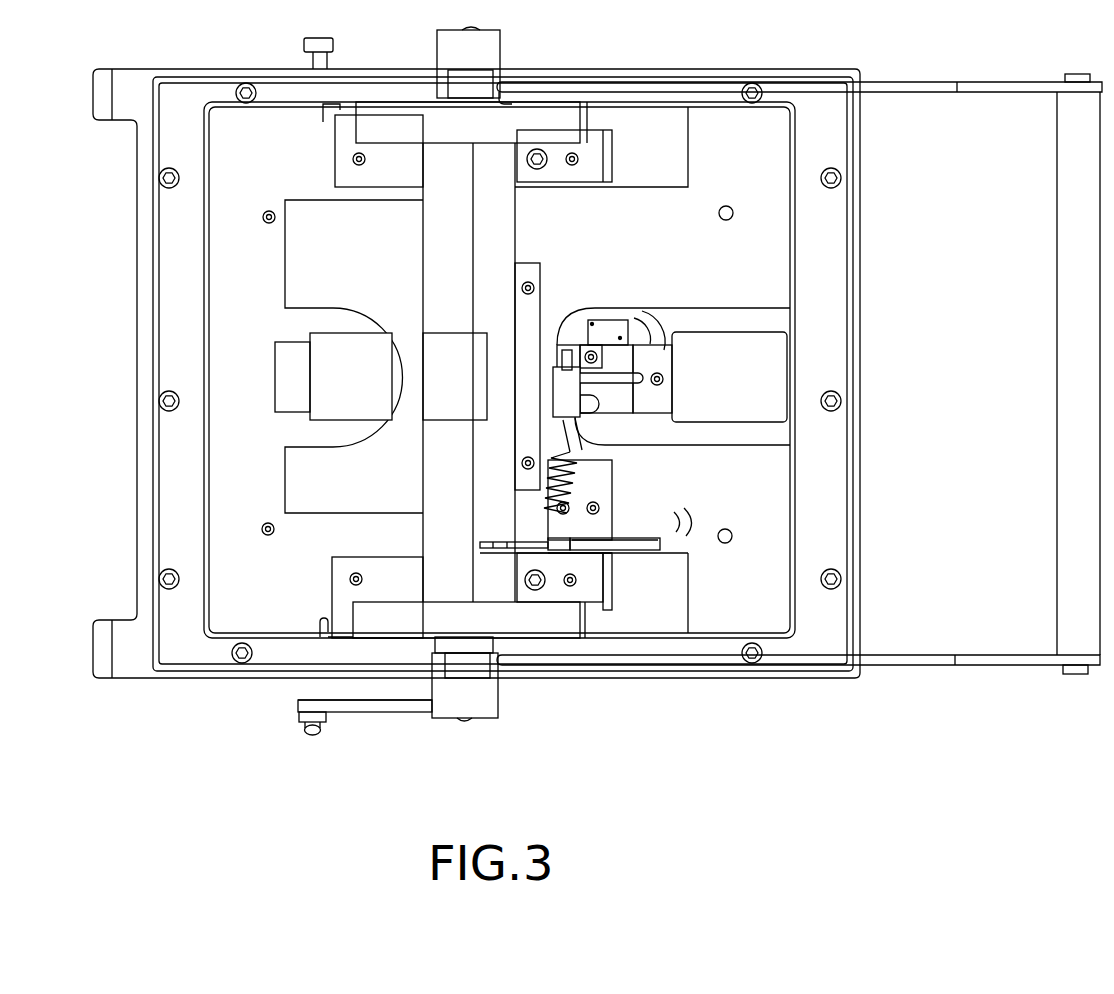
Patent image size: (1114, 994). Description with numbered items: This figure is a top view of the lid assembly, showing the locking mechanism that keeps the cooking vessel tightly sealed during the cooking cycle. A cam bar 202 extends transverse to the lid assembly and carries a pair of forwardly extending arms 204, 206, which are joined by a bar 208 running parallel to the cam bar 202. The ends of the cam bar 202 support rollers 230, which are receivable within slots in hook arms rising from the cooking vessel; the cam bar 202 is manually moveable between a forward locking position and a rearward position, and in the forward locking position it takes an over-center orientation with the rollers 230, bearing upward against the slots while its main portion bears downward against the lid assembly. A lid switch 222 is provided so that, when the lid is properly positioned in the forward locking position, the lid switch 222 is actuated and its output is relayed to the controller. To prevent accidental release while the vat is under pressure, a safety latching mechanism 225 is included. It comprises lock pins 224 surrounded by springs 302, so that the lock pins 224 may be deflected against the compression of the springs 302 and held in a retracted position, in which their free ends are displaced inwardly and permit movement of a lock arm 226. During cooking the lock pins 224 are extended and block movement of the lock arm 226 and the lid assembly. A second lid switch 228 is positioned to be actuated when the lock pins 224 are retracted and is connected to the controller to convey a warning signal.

The cam bar 202 is at (502, 33).
The forwardly extending arm 204 is at (922, 656).
The forwardly extending arm 206 is at (930, 82).
The bar 208 is at (1057, 373).
The lid switch 222 is at (680, 546).
The lock pin 224 is at (575, 420).
The safety latching mechanism 225 is at (600, 525).
The lock arm 226 is at (543, 553).
The lid switch 228 is at (612, 320).
The roller 230 is at (498, 700).
The spring 302 is at (577, 475).